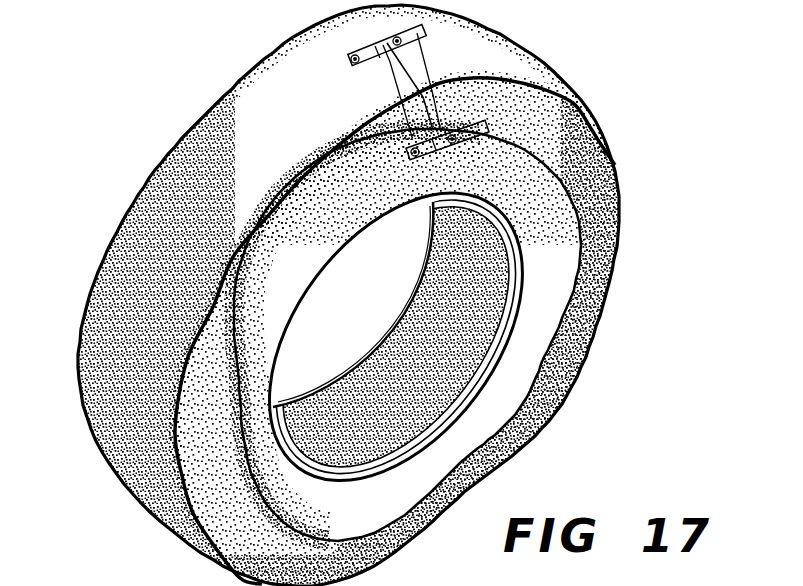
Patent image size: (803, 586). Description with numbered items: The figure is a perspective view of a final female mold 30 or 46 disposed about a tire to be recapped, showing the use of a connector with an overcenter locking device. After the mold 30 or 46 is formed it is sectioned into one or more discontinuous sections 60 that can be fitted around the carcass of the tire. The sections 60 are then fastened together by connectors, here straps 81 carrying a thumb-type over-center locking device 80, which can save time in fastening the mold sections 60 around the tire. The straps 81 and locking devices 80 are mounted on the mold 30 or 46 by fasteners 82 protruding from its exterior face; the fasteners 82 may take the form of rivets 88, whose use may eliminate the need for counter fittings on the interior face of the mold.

The mold 30 is at (590, 101).
The mold 46 is at (616, 152).
The section 60 is at (230, 111).
The overcenter locking device 80 is at (386, 52).
The strap 81 is at (480, 130).
The fastener 82 is at (352, 50).
The rivet 88 is at (346, 63).